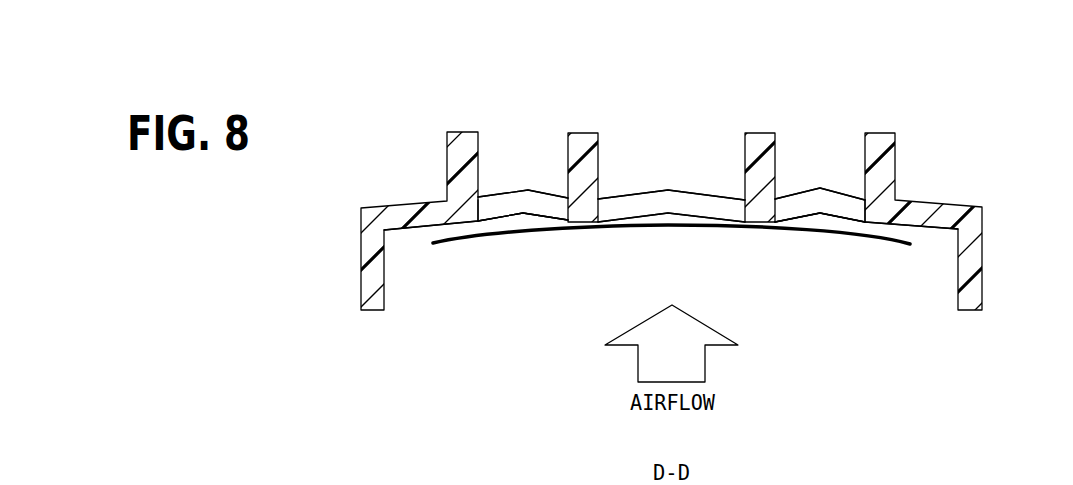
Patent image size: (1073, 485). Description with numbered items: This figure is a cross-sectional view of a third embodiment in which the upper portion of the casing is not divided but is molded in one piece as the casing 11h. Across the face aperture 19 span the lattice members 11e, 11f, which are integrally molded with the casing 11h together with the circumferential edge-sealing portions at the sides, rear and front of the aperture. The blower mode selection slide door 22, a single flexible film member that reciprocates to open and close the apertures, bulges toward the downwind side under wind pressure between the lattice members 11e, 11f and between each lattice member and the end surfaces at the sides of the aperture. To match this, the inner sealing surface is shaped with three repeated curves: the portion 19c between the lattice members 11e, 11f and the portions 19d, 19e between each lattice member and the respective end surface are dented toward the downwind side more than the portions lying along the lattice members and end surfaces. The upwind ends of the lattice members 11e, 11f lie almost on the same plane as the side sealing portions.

The face aperture 19 is at (793, 160).
The portion of the sealing surface 19c is at (673, 216).
The portion of the sealing surface 19d is at (523, 216).
The portion of the sealing surface 19e is at (822, 216).
The lattice member 11e is at (565, 141).
The lattice member 11f is at (742, 141).
The casing 11h is at (927, 200).
The blower mode selection slide door 22 is at (532, 232).